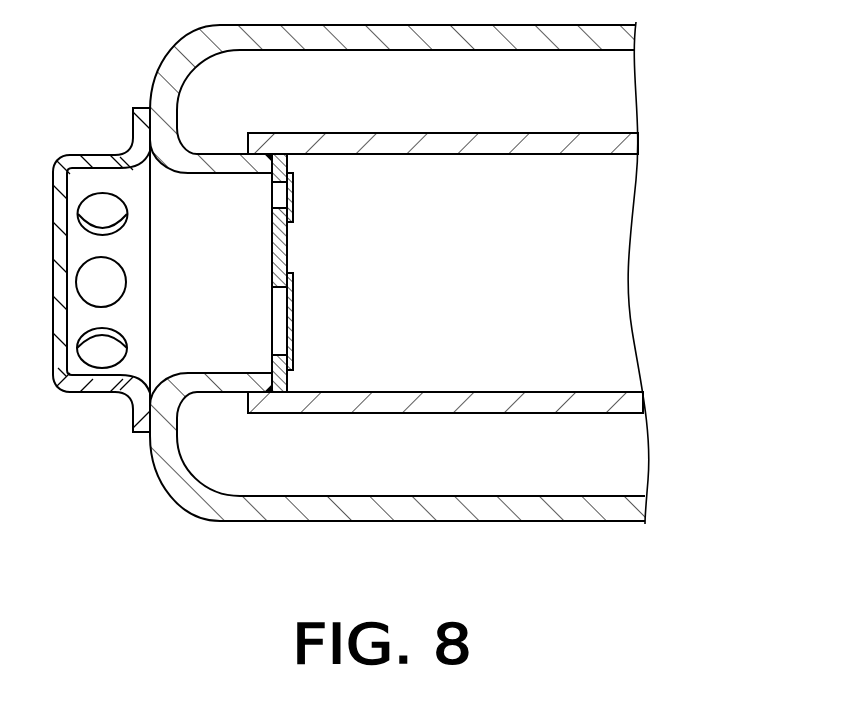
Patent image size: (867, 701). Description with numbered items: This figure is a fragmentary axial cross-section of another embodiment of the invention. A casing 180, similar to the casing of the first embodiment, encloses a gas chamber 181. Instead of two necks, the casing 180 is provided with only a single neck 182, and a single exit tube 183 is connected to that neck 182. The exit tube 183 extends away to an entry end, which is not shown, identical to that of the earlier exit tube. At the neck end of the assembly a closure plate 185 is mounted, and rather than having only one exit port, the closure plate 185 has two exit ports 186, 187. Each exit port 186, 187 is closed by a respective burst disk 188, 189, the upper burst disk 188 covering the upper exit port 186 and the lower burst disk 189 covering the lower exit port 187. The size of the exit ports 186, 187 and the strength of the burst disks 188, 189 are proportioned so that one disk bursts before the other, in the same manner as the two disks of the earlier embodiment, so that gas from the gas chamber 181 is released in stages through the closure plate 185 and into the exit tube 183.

The casing 180 is at (600, 27).
The gas chamber 181 is at (590, 97).
The neck 182 is at (228, 393).
The exit tube 183 is at (610, 393).
The closure plate 185 is at (290, 383).
The exit port 186 is at (272, 196).
The exit port 187 is at (272, 357).
The burst disk 188 is at (293, 198).
The burst disk 189 is at (294, 319).